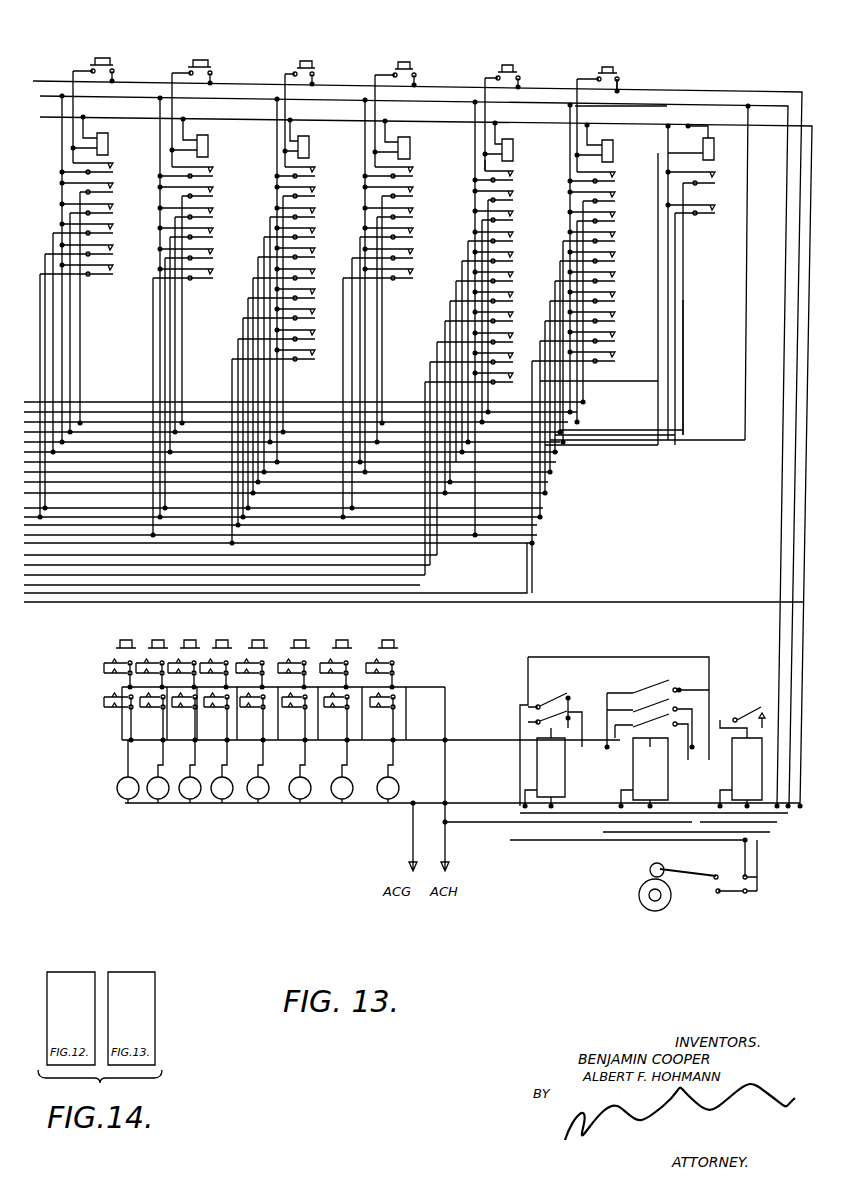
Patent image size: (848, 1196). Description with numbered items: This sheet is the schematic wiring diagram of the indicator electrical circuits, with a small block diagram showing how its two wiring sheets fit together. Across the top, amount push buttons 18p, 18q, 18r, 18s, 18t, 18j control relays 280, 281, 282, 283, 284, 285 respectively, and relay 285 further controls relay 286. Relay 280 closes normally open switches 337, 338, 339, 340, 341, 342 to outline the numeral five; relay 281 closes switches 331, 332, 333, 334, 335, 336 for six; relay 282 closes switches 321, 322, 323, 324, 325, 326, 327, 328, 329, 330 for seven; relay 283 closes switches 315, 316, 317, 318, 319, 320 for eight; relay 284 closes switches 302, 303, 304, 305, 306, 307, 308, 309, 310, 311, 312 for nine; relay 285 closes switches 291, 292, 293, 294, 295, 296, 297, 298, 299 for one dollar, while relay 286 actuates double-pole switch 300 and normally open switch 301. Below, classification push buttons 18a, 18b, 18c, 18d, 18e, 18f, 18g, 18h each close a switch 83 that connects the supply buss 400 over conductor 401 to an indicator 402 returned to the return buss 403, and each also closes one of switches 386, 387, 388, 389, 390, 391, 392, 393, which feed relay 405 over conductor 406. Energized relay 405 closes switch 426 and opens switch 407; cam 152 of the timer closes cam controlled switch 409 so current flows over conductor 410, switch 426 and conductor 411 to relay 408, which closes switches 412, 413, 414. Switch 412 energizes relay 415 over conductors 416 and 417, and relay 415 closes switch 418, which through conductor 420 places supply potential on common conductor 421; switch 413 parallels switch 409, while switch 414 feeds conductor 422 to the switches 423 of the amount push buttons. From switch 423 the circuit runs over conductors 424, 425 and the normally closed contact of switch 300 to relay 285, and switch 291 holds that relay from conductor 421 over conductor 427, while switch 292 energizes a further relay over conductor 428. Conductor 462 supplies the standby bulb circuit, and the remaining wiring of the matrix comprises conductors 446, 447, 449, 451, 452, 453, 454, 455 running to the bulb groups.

The push button 18p is at (93, 52).
The push button 18q is at (192, 53).
The push button 18r is at (300, 56).
The push button 18s is at (395, 57).
The push button 18t is at (502, 60).
The push button 18j is at (600, 62).
The push button 18a is at (122, 632).
The push button 18b is at (154, 632).
The push button 18c is at (187, 632).
The push button 18d is at (219, 632).
The push button 18e is at (256, 632).
The push button 18f is at (299, 632).
The push button 18g is at (341, 632).
The push button 18h is at (387, 632).
The switch 83 is at (242, 668).
The cam 152 is at (648, 915).
The relay 280 is at (108, 139).
The relay 281 is at (208, 141).
The relay 282 is at (309, 142).
The relay 283 is at (410, 143).
The relay 284 is at (513, 145).
The relay 285 is at (613, 146).
The relay 286 is at (713, 144).
The switch 291 is at (618, 176).
The switch 292 is at (618, 196).
The switch 293 is at (618, 216).
The switch 294 is at (618, 256).
The switch 295 is at (618, 276).
The switch 296 is at (618, 296).
The switch 297 is at (618, 316).
The switch 298 is at (618, 336).
The switch 299 is at (618, 356).
The switch 300 is at (718, 176).
The switch 301 is at (708, 216).
The switch 302 is at (516, 175).
The switch 303 is at (516, 195).
The switch 304 is at (516, 215).
The switch 305 is at (516, 236).
The switch 306 is at (516, 256).
The switch 307 is at (516, 276).
The switch 308 is at (516, 296).
The switch 309 is at (516, 316).
The switch 310 is at (516, 337).
The switch 311 is at (516, 357).
The switch 312 is at (515, 386).
The switch 315 is at (416, 171).
The switch 316 is at (416, 191).
The switch 317 is at (416, 212).
The switch 318 is at (416, 232).
The switch 319 is at (416, 253).
The switch 320 is at (416, 273).
The switch 321 is at (318, 171).
The switch 322 is at (318, 191).
The switch 323 is at (318, 212).
The switch 324 is at (318, 232).
The switch 325 is at (318, 252).
The switch 326 is at (318, 273).
The switch 327 is at (318, 293).
The switch 328 is at (318, 313).
The switch 329 is at (318, 334).
The switch 330 is at (318, 354).
The switch 331 is at (216, 171).
The switch 332 is at (216, 191).
The switch 333 is at (216, 212).
The switch 334 is at (216, 232).
The switch 335 is at (216, 253).
The switch 336 is at (216, 273).
The switch 337 is at (116, 167).
The switch 338 is at (116, 187).
The switch 339 is at (116, 208).
The switch 340 is at (116, 228).
The switch 341 is at (116, 249).
The switch 342 is at (116, 269).
The switch 386 is at (106, 706).
The switch 387 is at (149, 716).
The switch 388 is at (182, 716).
The switch 389 is at (215, 716).
The switch 390 is at (252, 716).
The switch 391 is at (294, 716).
The switch 392 is at (336, 716).
The switch 393 is at (382, 716).
The ACH buss 400 is at (470, 838).
The conductor 401 is at (125, 757).
The indicator 402 is at (120, 795).
The ACG buss 403 is at (793, 836).
The relay 405 is at (560, 787).
The conductor 406 is at (480, 748).
The switch 407 is at (580, 719).
The relay 408 is at (644, 772).
The cam controlled switch 409 is at (703, 882).
The conductor 410 is at (762, 877).
The conductor 411 is at (593, 747).
The switch 412 is at (673, 688).
The switch 413 is at (684, 705).
The switch 414 is at (665, 719).
The relay 415 is at (748, 736).
The conductor 416 is at (590, 840).
The conductor 417 is at (712, 708).
The switch 418 is at (768, 706).
The conductor 420 is at (710, 772).
The ACH common conductor 421 is at (793, 498).
The ACH common conductor 422 is at (788, 456).
The switch 423 is at (628, 77).
The conductor 424 is at (578, 107).
The conductor 425 is at (685, 383).
The switch 426 is at (688, 325).
The conductor 427 is at (520, 172).
The conductor 428 is at (587, 402).
The conductor 446 is at (560, 392).
The conductor 447 is at (572, 464).
The conductor 449 is at (587, 482).
The conductor 451 is at (290, 497).
The conductor 452 is at (475, 522).
The conductor 453 is at (545, 532).
The conductor 454 is at (505, 426).
The conductor 455 is at (491, 464).
The conductor 462 is at (750, 280).